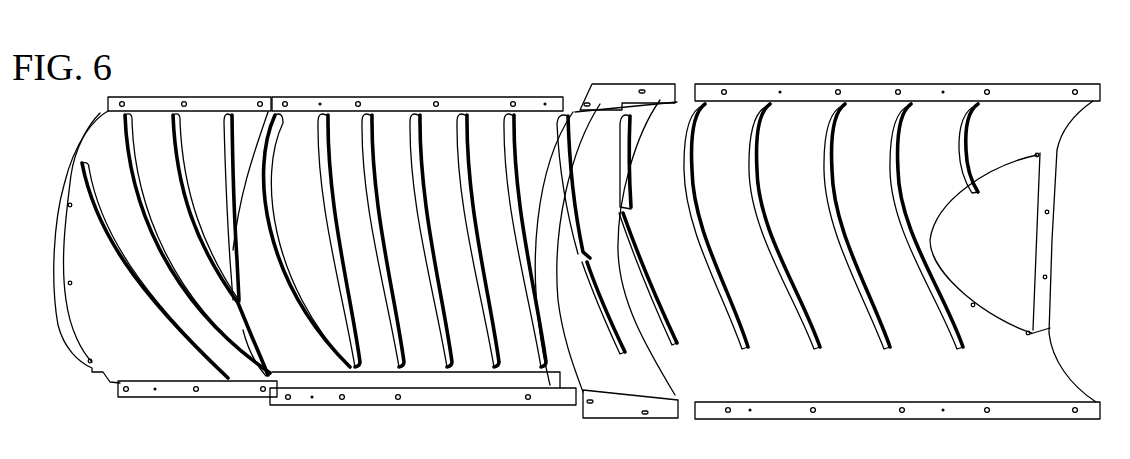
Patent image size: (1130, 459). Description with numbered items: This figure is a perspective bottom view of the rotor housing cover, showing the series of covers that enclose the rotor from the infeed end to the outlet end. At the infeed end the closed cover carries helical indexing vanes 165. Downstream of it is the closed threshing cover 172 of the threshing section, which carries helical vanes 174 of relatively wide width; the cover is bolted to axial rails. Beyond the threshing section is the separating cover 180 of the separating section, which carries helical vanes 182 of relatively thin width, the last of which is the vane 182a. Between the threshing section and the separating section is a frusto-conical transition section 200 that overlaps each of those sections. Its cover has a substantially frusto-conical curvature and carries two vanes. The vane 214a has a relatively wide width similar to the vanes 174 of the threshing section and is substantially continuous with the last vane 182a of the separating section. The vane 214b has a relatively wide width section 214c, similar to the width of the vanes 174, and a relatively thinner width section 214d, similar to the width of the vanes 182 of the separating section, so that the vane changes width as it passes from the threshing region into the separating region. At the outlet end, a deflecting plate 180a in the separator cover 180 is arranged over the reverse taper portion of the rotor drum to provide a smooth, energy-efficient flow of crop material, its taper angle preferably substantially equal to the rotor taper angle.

The helical indexing vanes 165 is at (128, 140).
The helical vanes 174 is at (331, 136).
The closed threshing cover 172 is at (417, 360).
The vane 214b is at (575, 187).
The relatively wide width section 214c is at (575, 252).
The relatively thinner width section 214d is at (615, 322).
The vane 214a is at (624, 170).
The last vane 182a is at (655, 300).
The helical vanes 182 is at (832, 138).
The separating cover 180 is at (1033, 353).
The deflecting plate 180a is at (1010, 253).
The frusto-conical transition section 200 is at (601, 362).